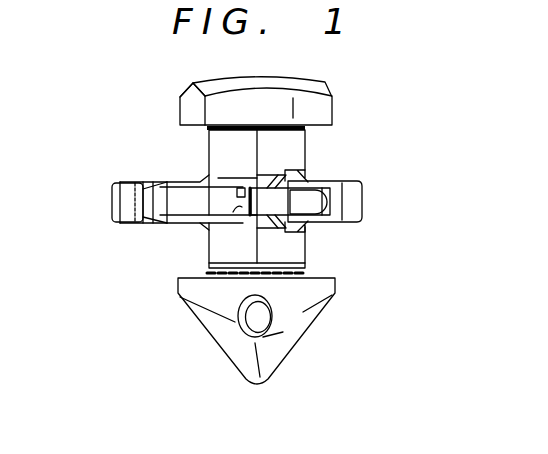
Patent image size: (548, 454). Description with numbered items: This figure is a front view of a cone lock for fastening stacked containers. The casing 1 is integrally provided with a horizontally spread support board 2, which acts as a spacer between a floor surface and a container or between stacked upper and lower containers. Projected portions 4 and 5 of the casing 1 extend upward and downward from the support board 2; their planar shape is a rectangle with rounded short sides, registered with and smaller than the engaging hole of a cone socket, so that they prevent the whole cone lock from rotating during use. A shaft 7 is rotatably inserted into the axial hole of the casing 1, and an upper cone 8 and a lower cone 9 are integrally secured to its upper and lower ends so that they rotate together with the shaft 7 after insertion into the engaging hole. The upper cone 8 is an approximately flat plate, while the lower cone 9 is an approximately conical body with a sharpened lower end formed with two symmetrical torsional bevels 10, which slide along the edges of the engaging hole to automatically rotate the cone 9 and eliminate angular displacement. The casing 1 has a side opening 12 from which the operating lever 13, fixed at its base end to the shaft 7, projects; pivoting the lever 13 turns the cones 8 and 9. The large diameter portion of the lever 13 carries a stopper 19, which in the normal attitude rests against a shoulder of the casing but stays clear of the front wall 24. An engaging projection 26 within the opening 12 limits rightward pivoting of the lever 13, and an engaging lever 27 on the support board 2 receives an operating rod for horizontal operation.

The casing 1 is at (208, 153).
The support board 2 is at (183, 195).
The upper projected portion 4 is at (293, 153).
The lower projected portion 5 is at (283, 250).
The shaft 7 is at (240, 205).
The upper cone 8 is at (317, 107).
The lower cone 9 is at (285, 345).
The torsional bevel 10 is at (230, 345).
The opening 12 is at (228, 200).
The operating lever 13 is at (312, 202).
The stopper 19 is at (313, 167).
The front wall 24 is at (207, 123).
The engaging projection 26 is at (237, 197).
The engaging lever 27 is at (128, 200).